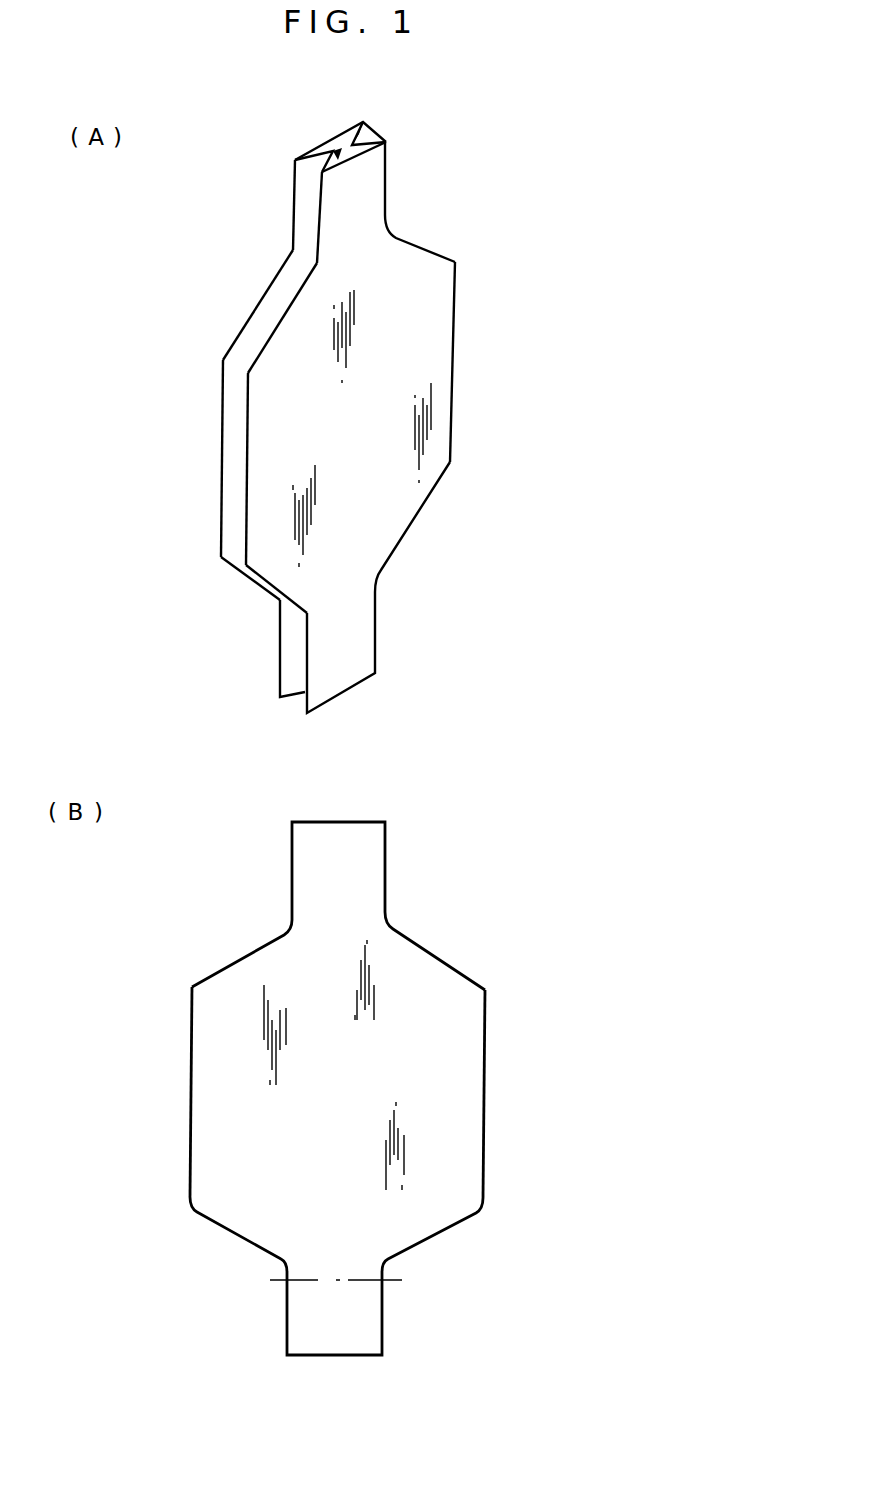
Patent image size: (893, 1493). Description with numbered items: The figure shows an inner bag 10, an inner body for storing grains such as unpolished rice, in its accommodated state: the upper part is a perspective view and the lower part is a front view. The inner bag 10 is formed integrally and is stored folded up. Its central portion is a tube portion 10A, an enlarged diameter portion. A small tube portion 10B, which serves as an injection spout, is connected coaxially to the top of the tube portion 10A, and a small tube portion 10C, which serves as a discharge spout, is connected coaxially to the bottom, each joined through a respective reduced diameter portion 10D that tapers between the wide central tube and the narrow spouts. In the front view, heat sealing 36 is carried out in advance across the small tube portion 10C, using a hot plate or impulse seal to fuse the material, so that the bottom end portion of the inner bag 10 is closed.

The inner bag 10 is at (405, 738).
The tube portion 10A is at (440, 403).
The small tube portion 10B is at (375, 176).
The small tube portion 10C is at (368, 641).
The reduced diameter portion 10D is at (412, 262).
The heat sealing 36 is at (318, 1282).